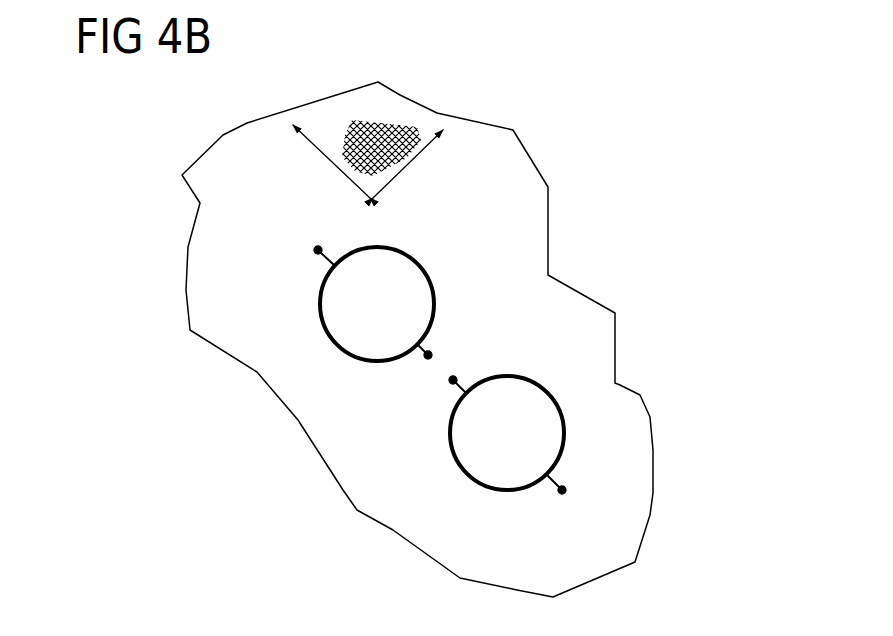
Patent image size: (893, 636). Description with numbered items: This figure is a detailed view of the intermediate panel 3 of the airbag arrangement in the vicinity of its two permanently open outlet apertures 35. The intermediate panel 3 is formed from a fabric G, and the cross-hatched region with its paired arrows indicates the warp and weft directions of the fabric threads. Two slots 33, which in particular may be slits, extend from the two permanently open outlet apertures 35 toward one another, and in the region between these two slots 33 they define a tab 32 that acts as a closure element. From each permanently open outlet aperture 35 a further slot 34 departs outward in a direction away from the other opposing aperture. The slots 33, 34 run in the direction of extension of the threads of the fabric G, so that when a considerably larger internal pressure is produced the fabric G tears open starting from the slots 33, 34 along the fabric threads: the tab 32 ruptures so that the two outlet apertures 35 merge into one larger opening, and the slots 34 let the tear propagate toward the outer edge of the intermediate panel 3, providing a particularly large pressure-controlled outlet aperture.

The intermediate panel 3 is at (652, 515).
The tab 32 is at (433, 367).
The slots 33 is at (420, 343).
The slot 34 is at (325, 257).
The permanently open outlet apertures 35 is at (395, 265).
The fabric G is at (393, 132).